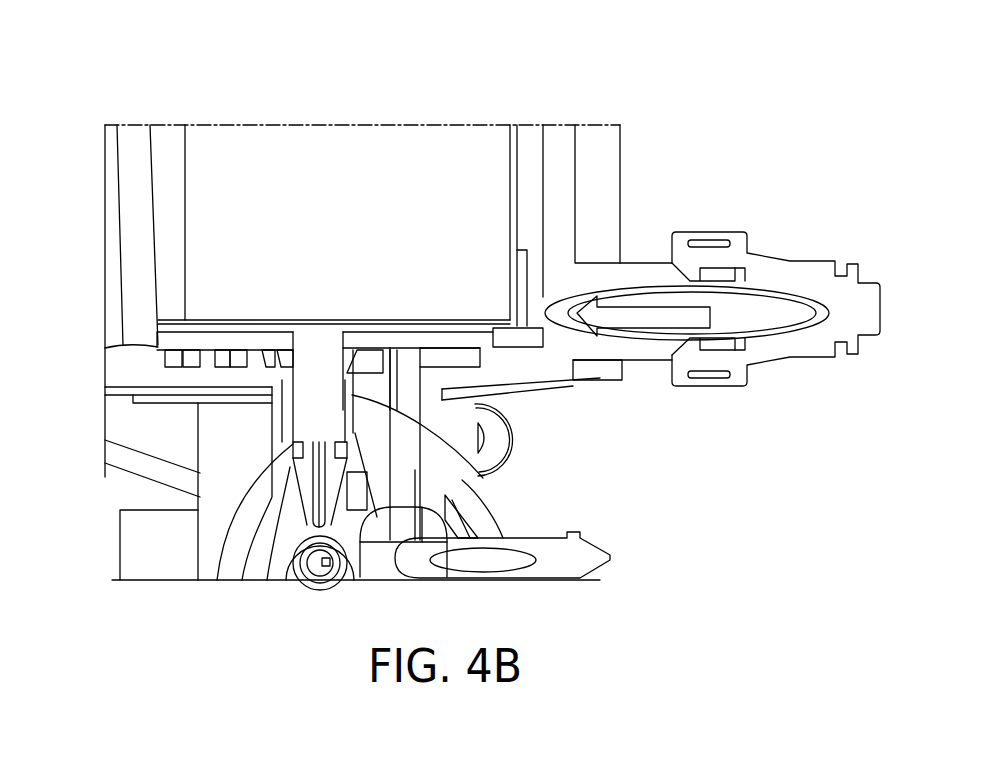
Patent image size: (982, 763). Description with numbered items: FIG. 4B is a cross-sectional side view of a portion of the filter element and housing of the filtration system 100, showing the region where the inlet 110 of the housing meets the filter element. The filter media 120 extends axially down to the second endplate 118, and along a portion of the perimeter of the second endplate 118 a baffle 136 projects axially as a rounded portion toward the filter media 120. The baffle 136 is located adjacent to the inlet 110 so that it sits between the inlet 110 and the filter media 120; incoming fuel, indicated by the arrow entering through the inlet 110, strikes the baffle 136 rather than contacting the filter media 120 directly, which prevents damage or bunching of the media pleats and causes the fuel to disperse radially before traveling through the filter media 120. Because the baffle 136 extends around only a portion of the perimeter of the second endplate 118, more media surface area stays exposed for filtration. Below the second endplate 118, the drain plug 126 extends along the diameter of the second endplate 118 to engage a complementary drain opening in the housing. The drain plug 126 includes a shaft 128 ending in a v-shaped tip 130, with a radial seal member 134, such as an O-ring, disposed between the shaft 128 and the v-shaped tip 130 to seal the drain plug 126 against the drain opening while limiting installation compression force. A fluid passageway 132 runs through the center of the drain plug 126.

The filtration system 100 is at (202, 102).
The inlet 110 is at (657, 293).
The second endplate 118 is at (187, 333).
The filter media 120 is at (463, 142).
The drain plug 126 is at (272, 428).
The shaft 128 is at (490, 475).
The v-shaped tip 130 is at (358, 543).
The fluid passageway 132 is at (307, 577).
The radial seal member 134 is at (228, 566).
The baffle 136 is at (548, 320).